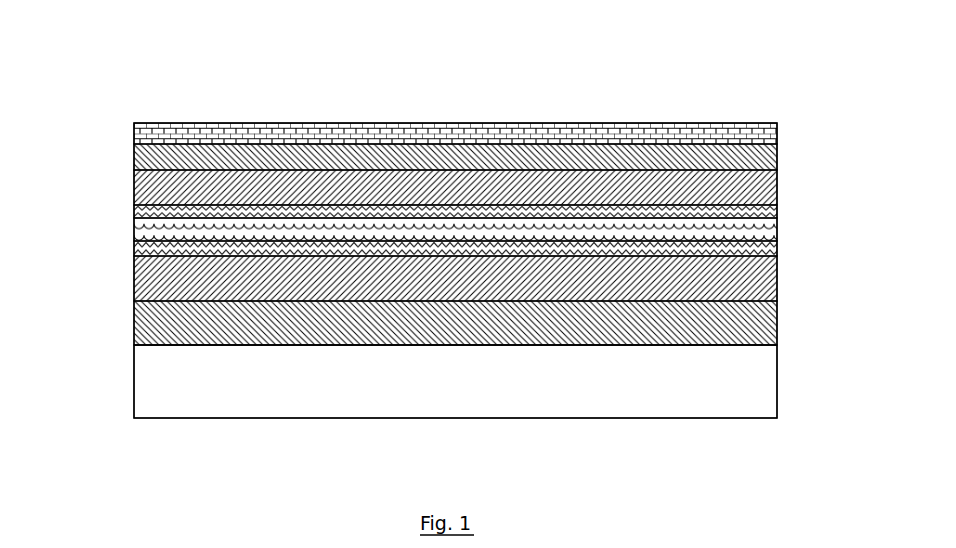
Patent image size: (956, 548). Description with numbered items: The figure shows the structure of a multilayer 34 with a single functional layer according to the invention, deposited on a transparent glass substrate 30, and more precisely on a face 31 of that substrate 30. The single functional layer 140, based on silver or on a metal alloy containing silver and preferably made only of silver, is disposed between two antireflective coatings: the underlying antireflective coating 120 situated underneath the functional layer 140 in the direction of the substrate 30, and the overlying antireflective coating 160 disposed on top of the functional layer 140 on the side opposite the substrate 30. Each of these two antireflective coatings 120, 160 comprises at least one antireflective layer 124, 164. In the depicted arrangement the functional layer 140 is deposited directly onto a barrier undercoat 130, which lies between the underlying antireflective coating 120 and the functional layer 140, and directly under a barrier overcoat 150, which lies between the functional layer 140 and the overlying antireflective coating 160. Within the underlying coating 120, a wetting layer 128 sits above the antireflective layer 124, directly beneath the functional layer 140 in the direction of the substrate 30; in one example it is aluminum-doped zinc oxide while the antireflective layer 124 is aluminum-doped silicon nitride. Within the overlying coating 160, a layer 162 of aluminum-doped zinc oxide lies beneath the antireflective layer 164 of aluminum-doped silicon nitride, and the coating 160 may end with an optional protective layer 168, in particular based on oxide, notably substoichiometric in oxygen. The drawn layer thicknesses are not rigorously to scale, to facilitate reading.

The multilayer 34 is at (158, 90).
The protective layer 168 is at (140, 131).
The antireflective layer 164 is at (144, 147).
The layer 162 is at (146, 175).
The overlying antireflective coating 160 is at (439, 160).
The barrier overcoat 150 is at (154, 207).
The functional layer 140 is at (747, 221).
The barrier undercoat 130 is at (144, 240).
The wetting layer 128 is at (148, 270).
The antireflective layer 124 is at (148, 317).
The underlying antireflective coating 120 is at (440, 300).
The transparent glass substrate 30 is at (458, 368).
The face 31 is at (733, 335).